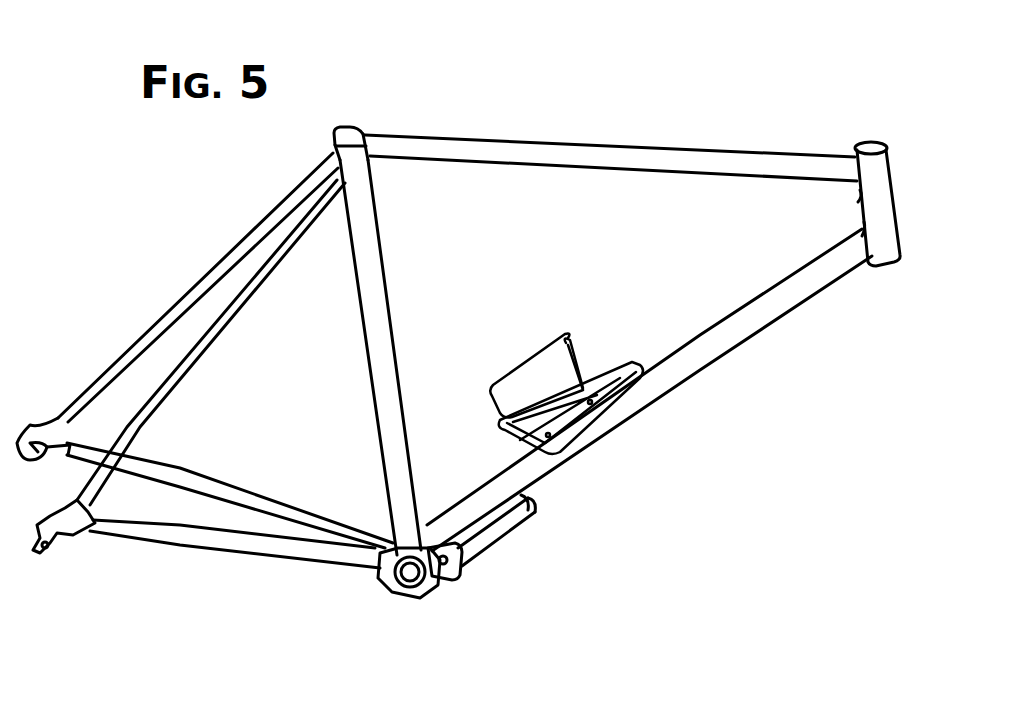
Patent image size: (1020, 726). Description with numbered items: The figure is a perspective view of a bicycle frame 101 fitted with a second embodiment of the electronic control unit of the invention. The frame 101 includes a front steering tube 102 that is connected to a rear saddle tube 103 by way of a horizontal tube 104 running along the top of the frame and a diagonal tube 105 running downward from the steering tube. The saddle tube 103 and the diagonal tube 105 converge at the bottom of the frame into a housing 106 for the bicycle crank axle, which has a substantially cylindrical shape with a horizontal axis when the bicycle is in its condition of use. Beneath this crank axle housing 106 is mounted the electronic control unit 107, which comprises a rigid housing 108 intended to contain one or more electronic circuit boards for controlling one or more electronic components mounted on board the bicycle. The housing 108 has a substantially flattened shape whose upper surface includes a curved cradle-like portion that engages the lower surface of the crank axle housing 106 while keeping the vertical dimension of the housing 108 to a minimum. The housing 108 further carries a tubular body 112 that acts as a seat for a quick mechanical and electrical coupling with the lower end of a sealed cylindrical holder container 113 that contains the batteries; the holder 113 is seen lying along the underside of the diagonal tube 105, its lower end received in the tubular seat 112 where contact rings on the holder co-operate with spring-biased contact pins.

The bicycle frame 101 is at (458, 362).
The front steering tube 102 is at (857, 211).
The rear saddle tube 103 is at (386, 308).
The horizontal tube 104 is at (556, 150).
The diagonal tube 105 is at (752, 338).
The housing for the bicycle crank axle 106 is at (367, 570).
The electronic control unit 107 is at (395, 590).
The rigid housing 108 is at (430, 598).
The tubular body 112 is at (440, 572).
The cylindrical holder container 113 is at (505, 528).